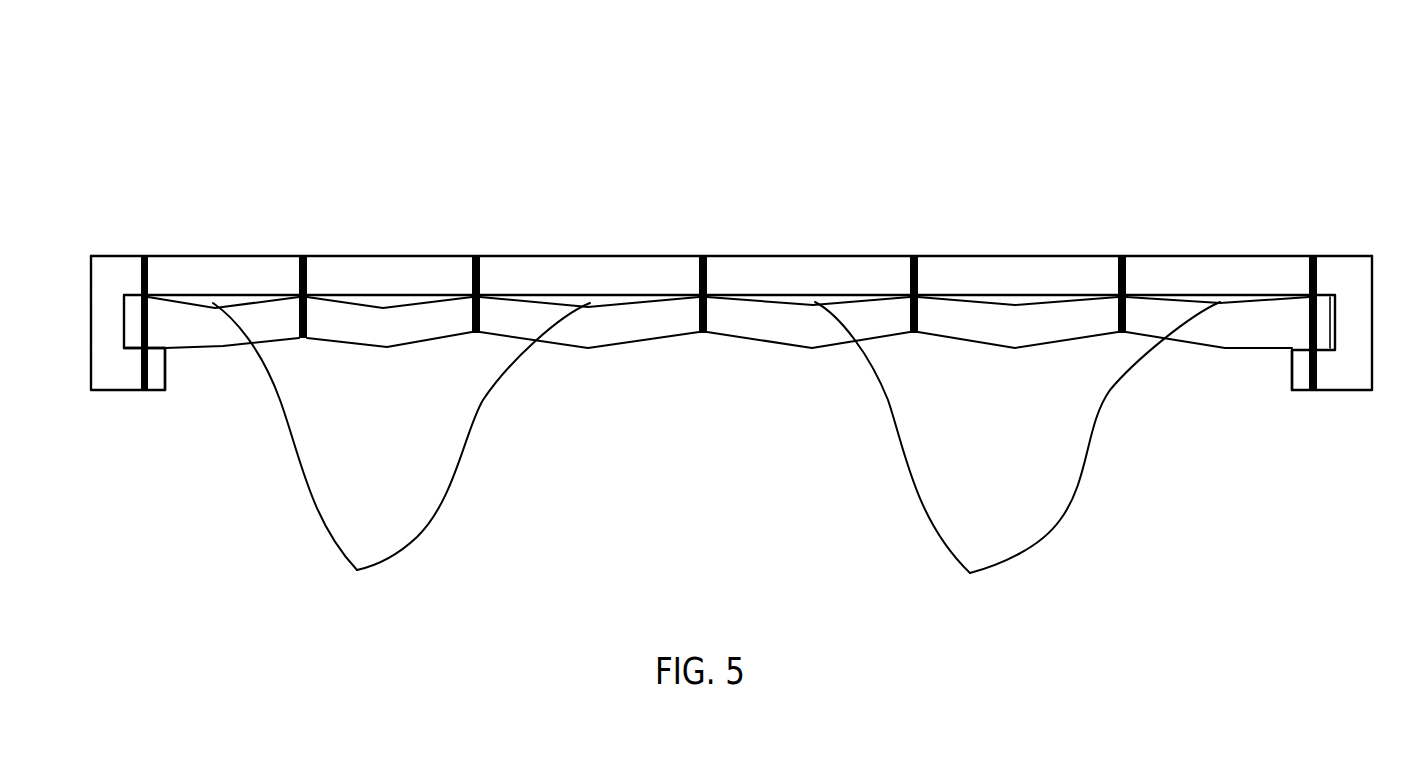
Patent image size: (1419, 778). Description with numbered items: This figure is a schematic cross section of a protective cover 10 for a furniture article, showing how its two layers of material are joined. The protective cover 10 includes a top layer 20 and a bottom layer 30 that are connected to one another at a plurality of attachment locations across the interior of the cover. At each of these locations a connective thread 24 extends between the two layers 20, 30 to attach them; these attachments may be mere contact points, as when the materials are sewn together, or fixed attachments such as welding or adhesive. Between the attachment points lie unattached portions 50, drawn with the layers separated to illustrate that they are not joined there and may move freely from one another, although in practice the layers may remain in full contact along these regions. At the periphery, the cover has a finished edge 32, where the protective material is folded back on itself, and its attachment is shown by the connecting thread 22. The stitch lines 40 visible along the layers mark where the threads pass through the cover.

The protective cover 10 is at (628, 107).
The top layer 20 is at (110, 270).
The connecting thread 22 is at (150, 290).
The connective thread 24 is at (307, 290).
The bottom layer 30 is at (217, 340).
The finished edge 32 is at (127, 380).
The sheet attachment lines 40 is at (150, 290).
The unattached portions 50 is at (383, 303).